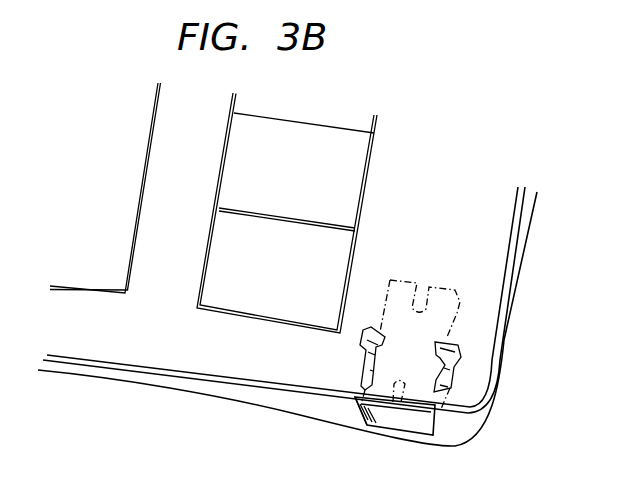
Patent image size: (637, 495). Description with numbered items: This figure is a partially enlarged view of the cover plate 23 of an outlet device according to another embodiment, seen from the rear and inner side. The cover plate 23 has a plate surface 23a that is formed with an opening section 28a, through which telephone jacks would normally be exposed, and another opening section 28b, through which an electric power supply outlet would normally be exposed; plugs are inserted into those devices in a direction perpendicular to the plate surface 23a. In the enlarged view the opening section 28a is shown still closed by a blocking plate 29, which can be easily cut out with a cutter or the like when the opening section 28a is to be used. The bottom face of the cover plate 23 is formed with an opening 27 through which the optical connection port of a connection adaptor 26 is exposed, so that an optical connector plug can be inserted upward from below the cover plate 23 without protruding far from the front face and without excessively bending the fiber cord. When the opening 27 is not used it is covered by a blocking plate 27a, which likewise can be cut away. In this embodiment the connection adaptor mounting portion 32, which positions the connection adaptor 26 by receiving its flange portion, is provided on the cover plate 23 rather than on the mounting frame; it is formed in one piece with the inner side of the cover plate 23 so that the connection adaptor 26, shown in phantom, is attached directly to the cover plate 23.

The cover plate 23 is at (183, 395).
The plate surface 23a is at (290, 407).
The connection adaptor 26 is at (463, 315).
The opening 27 is at (356, 414).
The blocking plate 27a is at (367, 395).
The opening section 28a is at (362, 216).
The opening section 28b is at (131, 223).
The blocking plate 29 is at (307, 136).
The connection adaptor mounting portion 32 is at (460, 349).